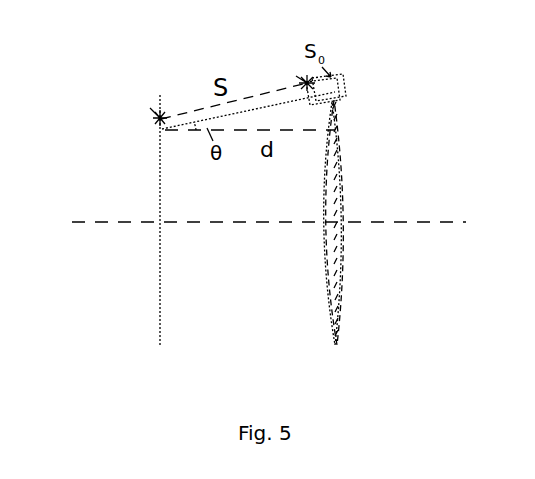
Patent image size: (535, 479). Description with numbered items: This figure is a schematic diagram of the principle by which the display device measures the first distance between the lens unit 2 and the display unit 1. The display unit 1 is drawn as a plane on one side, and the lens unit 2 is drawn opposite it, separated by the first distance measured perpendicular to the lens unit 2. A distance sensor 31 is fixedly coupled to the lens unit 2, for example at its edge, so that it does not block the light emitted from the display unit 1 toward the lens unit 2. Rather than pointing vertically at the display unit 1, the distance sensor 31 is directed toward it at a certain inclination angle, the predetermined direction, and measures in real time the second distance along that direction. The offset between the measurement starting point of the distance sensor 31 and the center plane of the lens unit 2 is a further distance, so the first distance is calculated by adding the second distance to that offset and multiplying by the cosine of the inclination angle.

The display unit 1 is at (160, 258).
The lens unit 2 is at (343, 250).
The distance sensor 31 is at (346, 84).